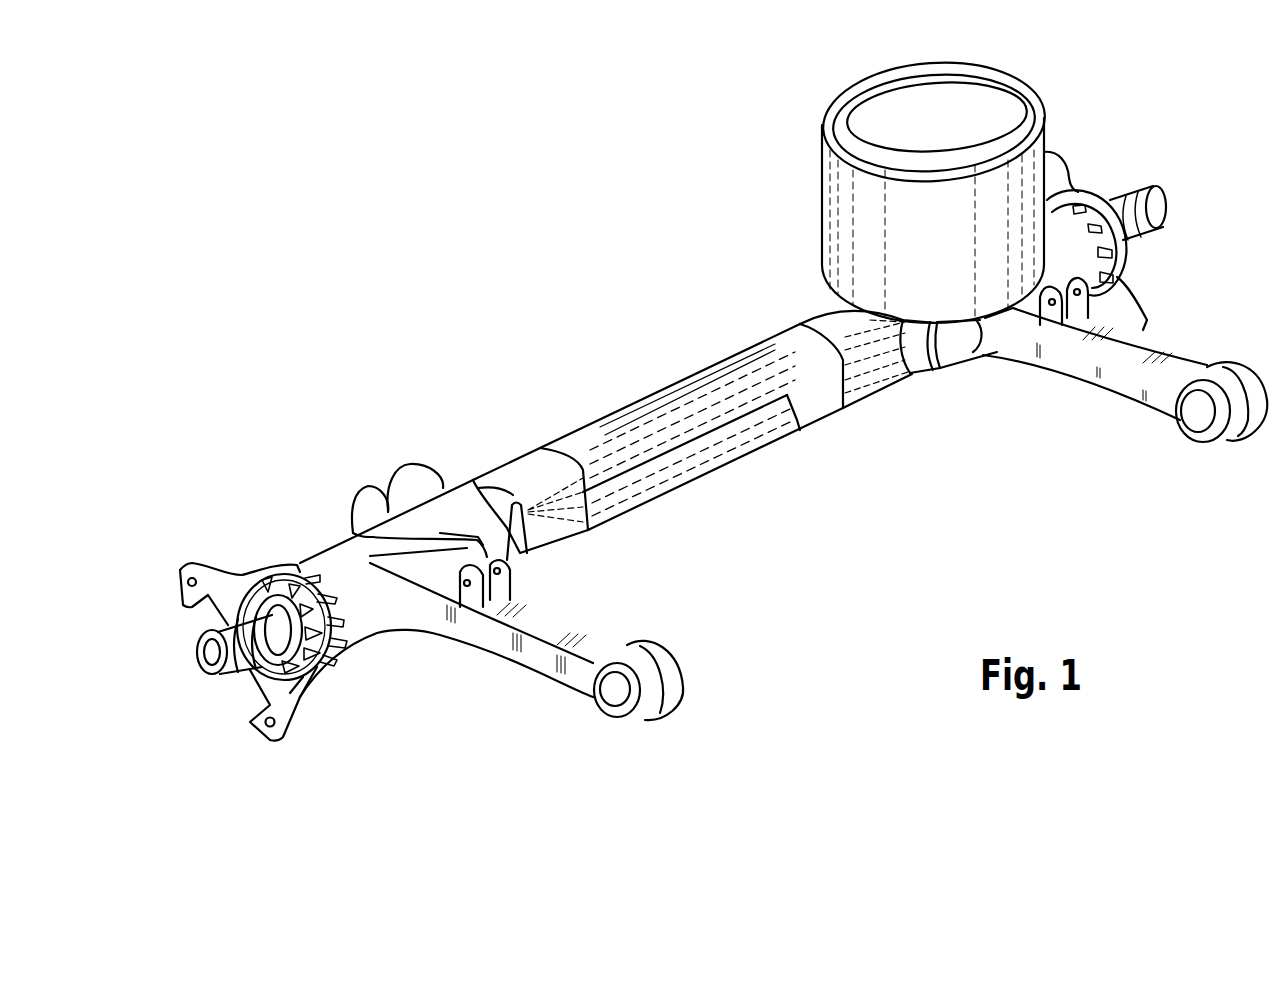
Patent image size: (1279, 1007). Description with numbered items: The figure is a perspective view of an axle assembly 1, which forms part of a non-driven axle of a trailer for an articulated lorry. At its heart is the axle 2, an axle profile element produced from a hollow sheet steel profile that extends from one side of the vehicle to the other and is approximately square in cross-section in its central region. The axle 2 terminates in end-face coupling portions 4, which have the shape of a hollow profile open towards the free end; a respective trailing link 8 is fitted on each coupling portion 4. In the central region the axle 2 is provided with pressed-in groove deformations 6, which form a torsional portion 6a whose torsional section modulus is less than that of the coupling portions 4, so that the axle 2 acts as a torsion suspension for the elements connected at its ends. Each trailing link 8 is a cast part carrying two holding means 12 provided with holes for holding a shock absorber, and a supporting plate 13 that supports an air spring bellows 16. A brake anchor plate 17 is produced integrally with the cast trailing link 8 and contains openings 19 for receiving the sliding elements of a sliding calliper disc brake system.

The axle assembly 1 is at (612, 320).
The axle 2 is at (710, 477).
The coupling portion 4 is at (492, 475).
The groove deformations 6 is at (797, 413).
The torsional portion 6a is at (653, 407).
The trailing link 8 is at (1078, 266).
The holding means 12 is at (497, 567).
The supporting plate 13 is at (445, 523).
The air spring bellows 16 is at (1038, 120).
The brake anchor plate 17 is at (237, 752).
The openings 19 is at (192, 587).